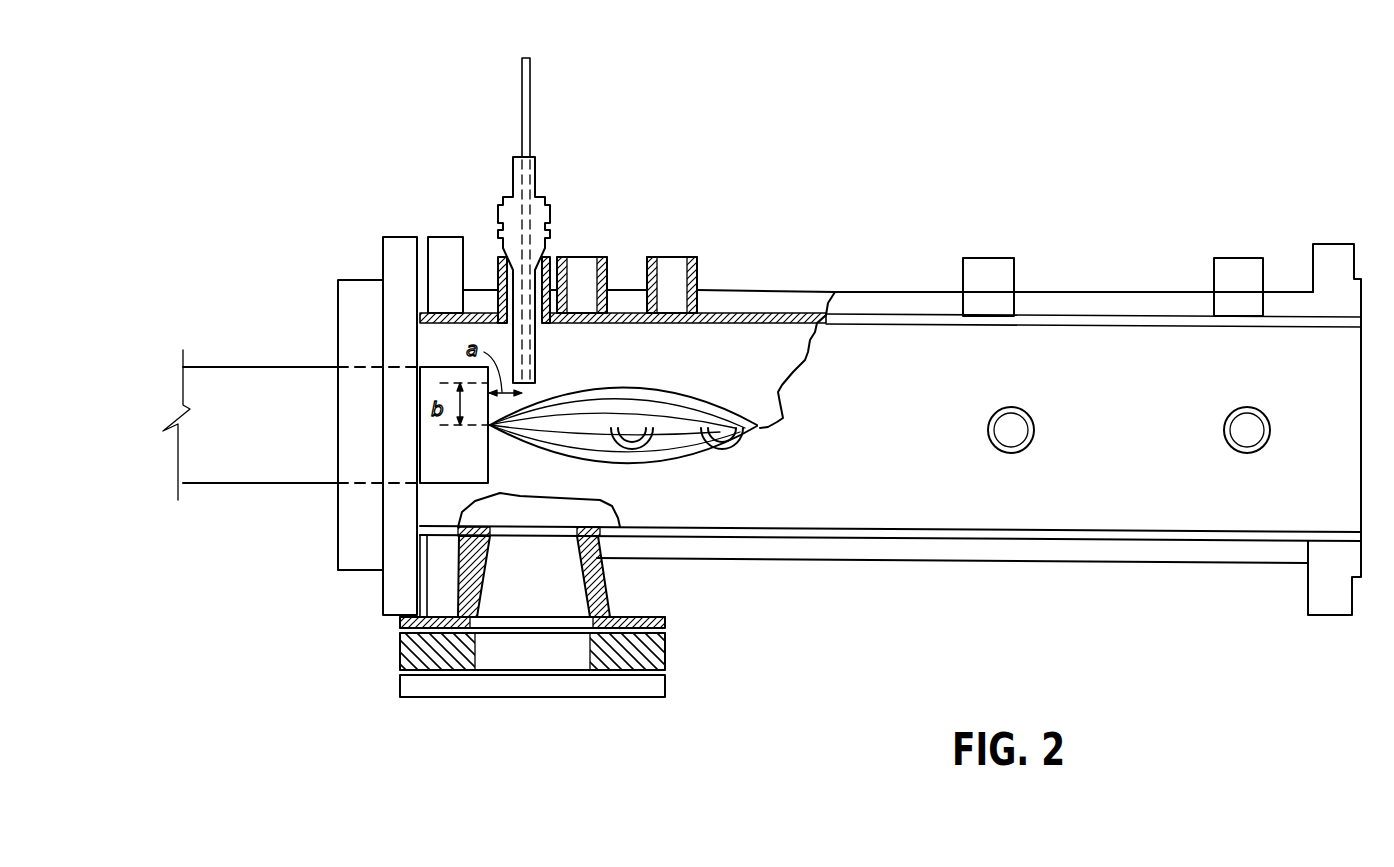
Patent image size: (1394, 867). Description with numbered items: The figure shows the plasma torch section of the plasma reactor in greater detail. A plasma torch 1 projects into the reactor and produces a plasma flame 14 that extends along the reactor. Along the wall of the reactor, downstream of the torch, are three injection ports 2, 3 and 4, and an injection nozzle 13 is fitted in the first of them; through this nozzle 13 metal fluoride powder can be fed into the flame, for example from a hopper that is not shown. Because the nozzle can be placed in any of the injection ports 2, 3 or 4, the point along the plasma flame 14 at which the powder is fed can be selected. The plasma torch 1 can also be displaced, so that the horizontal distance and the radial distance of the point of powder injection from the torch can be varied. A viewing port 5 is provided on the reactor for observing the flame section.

The plasma torch 1 is at (262, 490).
The injection port 2 is at (502, 268).
The injection port 3 is at (585, 257).
The injection port 4 is at (672, 257).
The viewing port 5 is at (592, 698).
The injection nozzle 13 is at (513, 177).
The plasma flame 14 is at (687, 460).